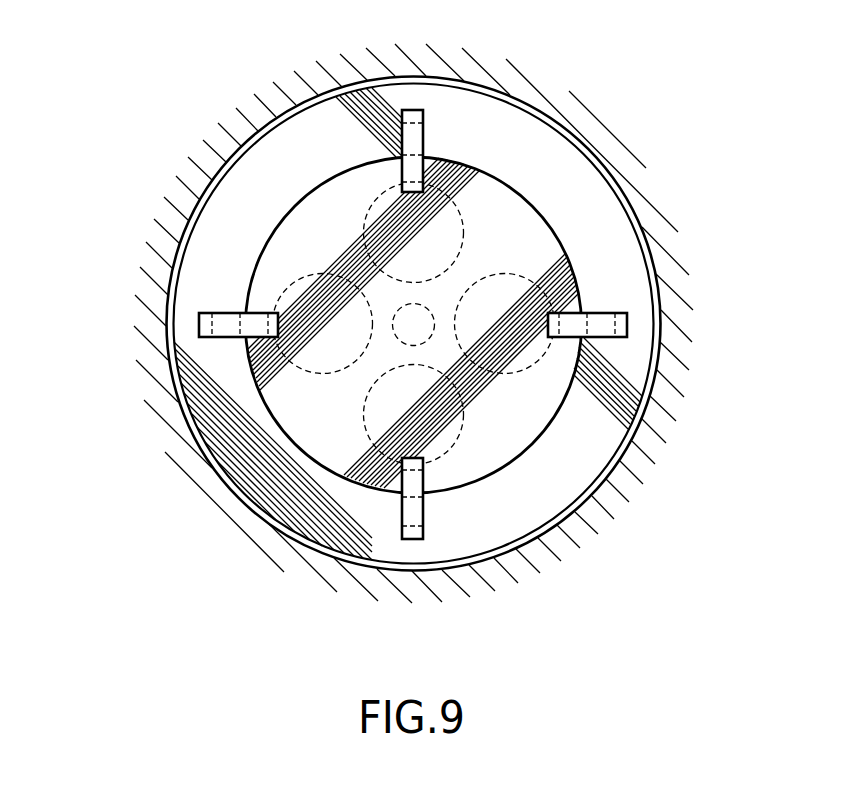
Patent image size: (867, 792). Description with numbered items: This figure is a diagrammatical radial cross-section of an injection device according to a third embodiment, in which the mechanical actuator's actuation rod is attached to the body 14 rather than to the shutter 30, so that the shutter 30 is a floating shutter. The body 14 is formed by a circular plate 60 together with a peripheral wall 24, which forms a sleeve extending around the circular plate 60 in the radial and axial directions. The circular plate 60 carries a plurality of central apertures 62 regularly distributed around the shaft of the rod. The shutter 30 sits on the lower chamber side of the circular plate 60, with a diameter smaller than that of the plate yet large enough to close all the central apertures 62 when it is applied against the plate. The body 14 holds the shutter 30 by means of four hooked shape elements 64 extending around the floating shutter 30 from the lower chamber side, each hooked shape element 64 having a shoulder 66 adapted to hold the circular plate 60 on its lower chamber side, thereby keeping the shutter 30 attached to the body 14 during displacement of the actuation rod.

The body 14 is at (232, 227).
The peripheral wall 24 is at (665, 338).
The shutter 30 is at (530, 418).
The circular plate 60 is at (517, 497).
The central aperture 62 is at (448, 223).
The hooked shape element 64 is at (415, 133).
The shoulder 66 is at (408, 172).